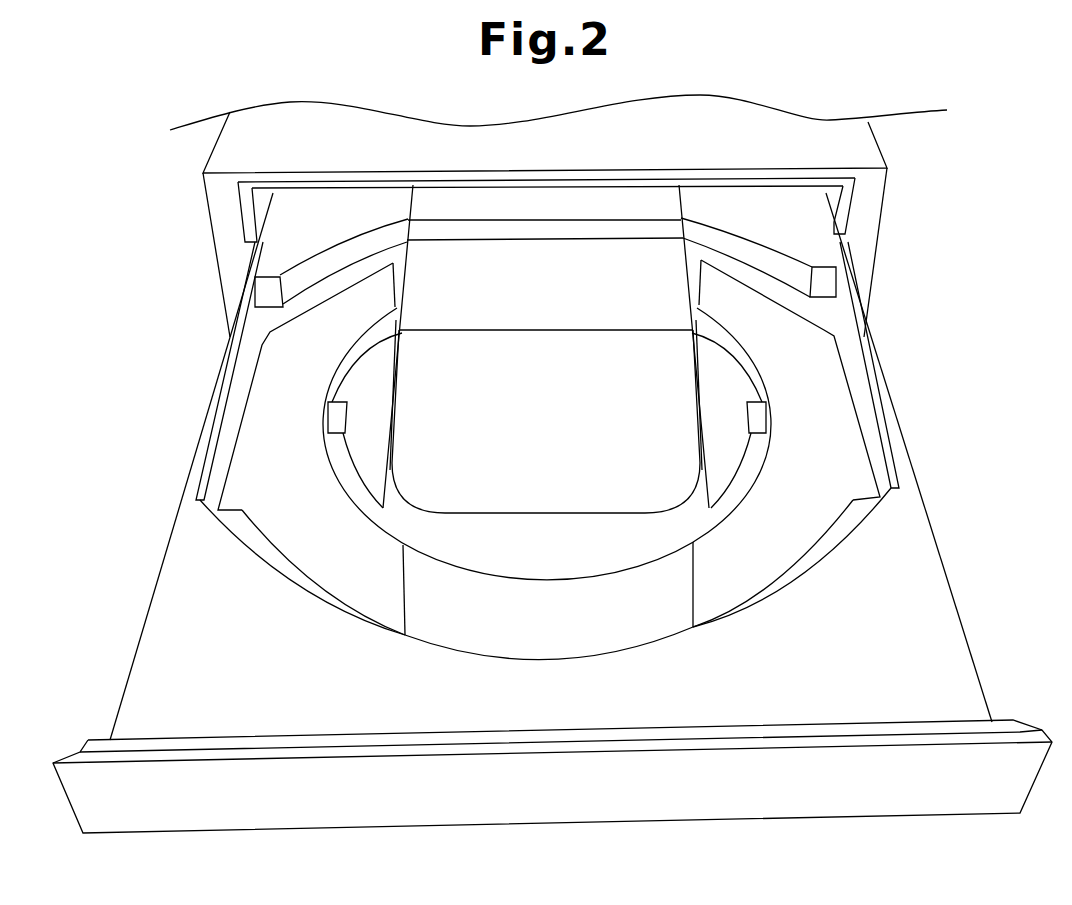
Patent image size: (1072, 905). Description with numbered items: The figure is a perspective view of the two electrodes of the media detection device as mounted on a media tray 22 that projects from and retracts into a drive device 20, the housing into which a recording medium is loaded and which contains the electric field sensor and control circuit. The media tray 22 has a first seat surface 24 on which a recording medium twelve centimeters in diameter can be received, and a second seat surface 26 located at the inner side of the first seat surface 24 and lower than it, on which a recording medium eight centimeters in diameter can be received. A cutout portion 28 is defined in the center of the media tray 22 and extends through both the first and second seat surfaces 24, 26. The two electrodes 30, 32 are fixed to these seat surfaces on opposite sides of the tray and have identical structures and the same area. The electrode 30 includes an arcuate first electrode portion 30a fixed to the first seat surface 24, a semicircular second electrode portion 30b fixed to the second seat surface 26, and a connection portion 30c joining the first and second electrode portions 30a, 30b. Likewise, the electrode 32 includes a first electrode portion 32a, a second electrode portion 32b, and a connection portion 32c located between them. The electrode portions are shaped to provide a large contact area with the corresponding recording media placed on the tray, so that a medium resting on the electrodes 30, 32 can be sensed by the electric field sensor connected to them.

The drive device 20 is at (883, 140).
The media tray 22 is at (960, 615).
The first seat surface 24 is at (828, 312).
The second seat surface 26 is at (693, 517).
The cutout portion 28 is at (430, 505).
The electrode 30 is at (850, 443).
The first electrode portion 30a is at (812, 520).
The second electrode portion 30b is at (717, 403).
The connection portion 30c is at (753, 403).
The electrode 32 is at (238, 447).
The first electrode portion 32a is at (280, 533).
The second electrode portion 32b is at (378, 437).
The connection portion 32c is at (337, 413).